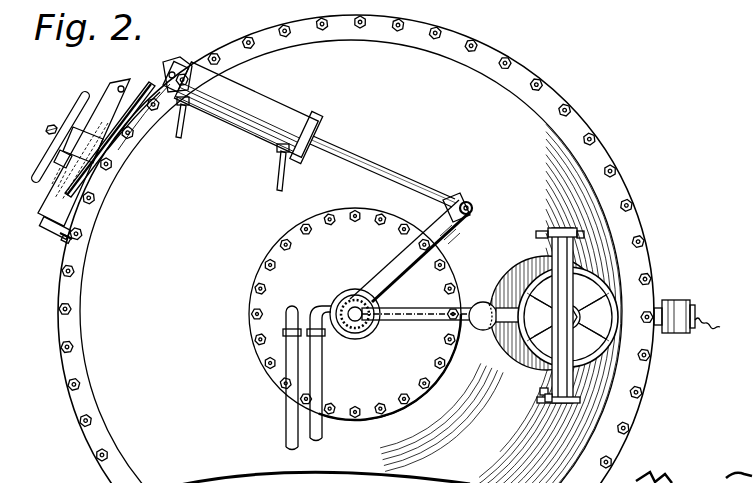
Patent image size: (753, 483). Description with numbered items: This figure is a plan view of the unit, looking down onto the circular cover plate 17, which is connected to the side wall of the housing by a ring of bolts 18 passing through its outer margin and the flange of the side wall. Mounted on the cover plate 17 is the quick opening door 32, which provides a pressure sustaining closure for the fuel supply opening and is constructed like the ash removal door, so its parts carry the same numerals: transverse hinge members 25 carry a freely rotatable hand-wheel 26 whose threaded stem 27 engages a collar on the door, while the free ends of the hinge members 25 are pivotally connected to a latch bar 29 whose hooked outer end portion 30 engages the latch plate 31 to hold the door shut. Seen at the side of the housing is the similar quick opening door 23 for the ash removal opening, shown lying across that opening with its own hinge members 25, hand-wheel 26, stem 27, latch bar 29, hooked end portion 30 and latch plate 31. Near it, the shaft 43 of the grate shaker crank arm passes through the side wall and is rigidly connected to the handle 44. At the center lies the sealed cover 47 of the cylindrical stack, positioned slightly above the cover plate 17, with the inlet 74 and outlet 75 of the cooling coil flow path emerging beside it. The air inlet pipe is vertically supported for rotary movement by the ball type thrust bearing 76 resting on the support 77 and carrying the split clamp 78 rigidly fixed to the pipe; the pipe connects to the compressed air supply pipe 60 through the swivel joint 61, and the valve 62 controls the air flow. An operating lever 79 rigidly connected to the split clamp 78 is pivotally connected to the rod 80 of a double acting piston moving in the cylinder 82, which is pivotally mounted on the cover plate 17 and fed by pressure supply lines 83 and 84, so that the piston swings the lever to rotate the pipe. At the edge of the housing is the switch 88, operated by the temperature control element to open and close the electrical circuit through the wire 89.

The cover plate 17 is at (568, 172).
The bolts 18 is at (638, 228).
The quick opening door 23 is at (77, 212).
The transverse hinge members 25 is at (60, 175).
The hand-wheel 26 is at (55, 154).
The threaded stem 27 is at (46, 131).
The latch bar 29 is at (50, 226).
The hooked outer end portion 30 is at (65, 241).
The latch plate 31 is at (60, 233).
The quick opening door 32 is at (521, 262).
The shaft 43 is at (102, 160).
The handle 44 is at (107, 146).
The sealed cover 47 is at (447, 278).
The compressed air supply pipe 60 is at (415, 308).
The swivel joint 61 is at (365, 325).
The valve 62 is at (478, 330).
The inlet 74 is at (322, 432).
The outlet 75 is at (285, 436).
The ball type thrust bearing 76 is at (358, 292).
The support 77 is at (350, 292).
The split clamp 78 is at (340, 300).
The operating lever 79 is at (410, 253).
The rod 80 is at (432, 190).
The cylinder 82 is at (287, 112).
The pressure supply line 83 is at (180, 127).
The pressure supply line 84 is at (279, 176).
The switch 88 is at (680, 305).
The wire 89 is at (720, 327).